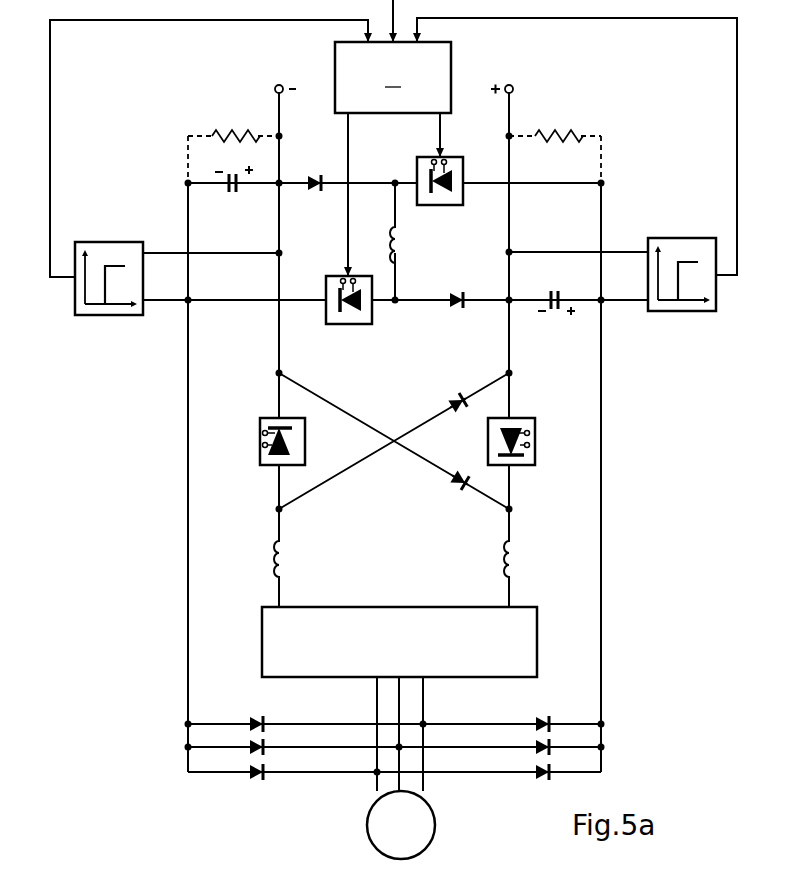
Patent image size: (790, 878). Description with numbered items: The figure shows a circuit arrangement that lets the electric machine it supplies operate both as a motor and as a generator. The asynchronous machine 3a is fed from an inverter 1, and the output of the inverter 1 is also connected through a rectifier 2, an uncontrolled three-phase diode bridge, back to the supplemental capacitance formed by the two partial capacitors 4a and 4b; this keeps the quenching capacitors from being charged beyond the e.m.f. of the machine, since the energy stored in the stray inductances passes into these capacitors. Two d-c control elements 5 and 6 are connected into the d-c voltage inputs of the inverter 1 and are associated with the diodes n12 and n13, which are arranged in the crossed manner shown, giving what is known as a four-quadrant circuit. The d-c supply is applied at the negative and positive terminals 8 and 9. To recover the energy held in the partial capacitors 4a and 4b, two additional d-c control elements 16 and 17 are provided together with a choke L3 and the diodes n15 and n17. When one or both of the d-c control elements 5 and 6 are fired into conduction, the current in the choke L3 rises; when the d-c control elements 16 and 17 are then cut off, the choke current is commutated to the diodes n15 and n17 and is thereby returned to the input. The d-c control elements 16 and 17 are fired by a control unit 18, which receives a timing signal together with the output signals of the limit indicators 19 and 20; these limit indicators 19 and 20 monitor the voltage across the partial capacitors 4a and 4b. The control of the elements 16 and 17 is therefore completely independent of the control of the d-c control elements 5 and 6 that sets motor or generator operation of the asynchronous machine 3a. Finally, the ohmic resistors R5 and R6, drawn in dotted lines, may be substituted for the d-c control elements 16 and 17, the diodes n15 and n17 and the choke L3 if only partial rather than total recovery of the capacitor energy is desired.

The inverter 1 is at (406, 654).
The rectifier 2 is at (286, 773).
The asynchronous machine 3a is at (434, 828).
The partial capacitor 4a is at (236, 192).
The partial capacitor 4b is at (553, 311).
The d-c control element 5 is at (260, 442).
The d-c control element 6 is at (535, 440).
The negative terminal 8 is at (285, 77).
The positive terminal 9 is at (503, 78).
The diode n12 is at (451, 477).
The diode n13 is at (449, 405).
The diode n15 is at (450, 291).
The diode n17 is at (308, 192).
The d-c control element 16 is at (452, 205).
The d-c control element 17 is at (346, 324).
The control unit 18 is at (393, 77).
The limit indicator 19 is at (96, 315).
The limit indicator 20 is at (690, 311).
The ohmic resistor R5 is at (227, 129).
The ohmic resistor R6 is at (554, 128).
The choke L3 is at (402, 231).